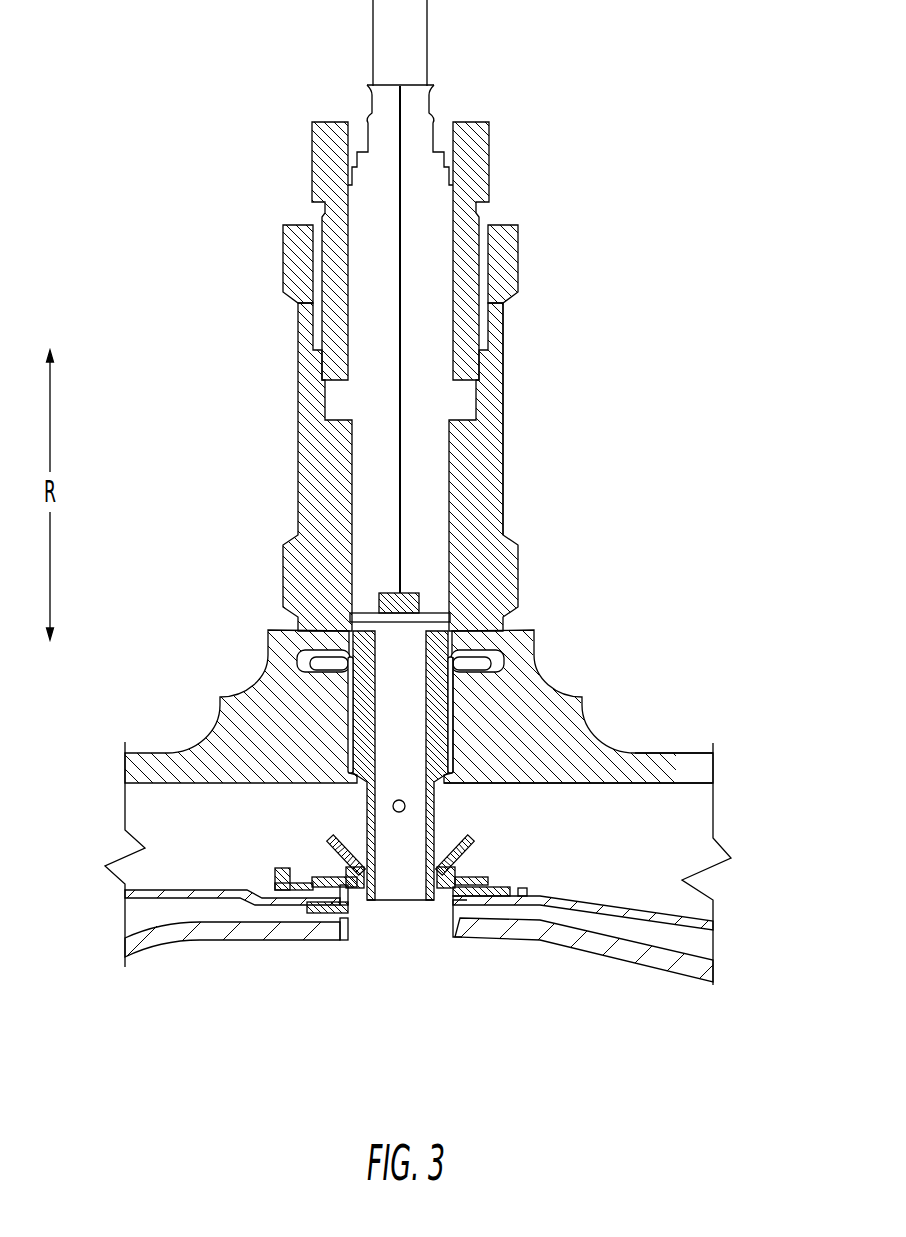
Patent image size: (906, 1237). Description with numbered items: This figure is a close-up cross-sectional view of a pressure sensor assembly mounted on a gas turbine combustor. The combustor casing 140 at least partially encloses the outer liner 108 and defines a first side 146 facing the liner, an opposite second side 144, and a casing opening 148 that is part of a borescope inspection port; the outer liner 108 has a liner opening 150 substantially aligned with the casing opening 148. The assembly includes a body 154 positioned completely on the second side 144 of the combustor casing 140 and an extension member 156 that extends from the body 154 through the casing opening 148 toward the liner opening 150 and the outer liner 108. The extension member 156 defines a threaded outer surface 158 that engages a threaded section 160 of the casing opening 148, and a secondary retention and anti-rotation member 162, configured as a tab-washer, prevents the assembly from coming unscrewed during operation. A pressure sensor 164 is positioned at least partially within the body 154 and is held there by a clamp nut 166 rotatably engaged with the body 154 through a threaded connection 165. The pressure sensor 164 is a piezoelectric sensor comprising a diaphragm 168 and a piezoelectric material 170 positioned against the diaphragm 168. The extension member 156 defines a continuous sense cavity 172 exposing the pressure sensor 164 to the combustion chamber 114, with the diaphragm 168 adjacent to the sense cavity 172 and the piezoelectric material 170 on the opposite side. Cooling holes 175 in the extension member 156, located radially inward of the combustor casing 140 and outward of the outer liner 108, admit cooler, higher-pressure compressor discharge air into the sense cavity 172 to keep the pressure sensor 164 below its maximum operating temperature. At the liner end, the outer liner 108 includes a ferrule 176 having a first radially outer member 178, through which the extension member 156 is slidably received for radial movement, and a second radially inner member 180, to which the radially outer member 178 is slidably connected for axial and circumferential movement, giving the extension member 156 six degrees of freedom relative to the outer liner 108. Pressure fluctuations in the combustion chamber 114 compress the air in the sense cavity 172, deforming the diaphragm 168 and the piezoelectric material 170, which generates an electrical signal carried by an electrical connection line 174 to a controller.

The outer liner 108 is at (690, 921).
The combustion chamber 114 is at (468, 1062).
The combustor casing 140 is at (640, 757).
The second side 144 is at (700, 746).
The first side 146 is at (692, 783).
The casing opening 148 is at (353, 750).
The liner opening 150 is at (356, 933).
The body 154 is at (503, 462).
The extension member 156 is at (453, 720).
The threaded outer surface 158 is at (453, 738).
The threaded section 160 is at (435, 676).
The secondary retention and anti-rotation member 162 is at (305, 665).
The pressure sensor 164 is at (422, 452).
The threaded connection 165 is at (490, 258).
The clamp nut 166 is at (487, 143).
The diaphragm 168 is at (357, 617).
The piezoelectric material 170 is at (390, 600).
The sense cavity 172 is at (400, 832).
The electrical connection line 174 is at (398, 293).
The cooling holes 175 is at (357, 806).
The ferrule 176 is at (505, 868).
The first radially outer member 178 is at (330, 838).
The second radially inner member 180 is at (275, 888).